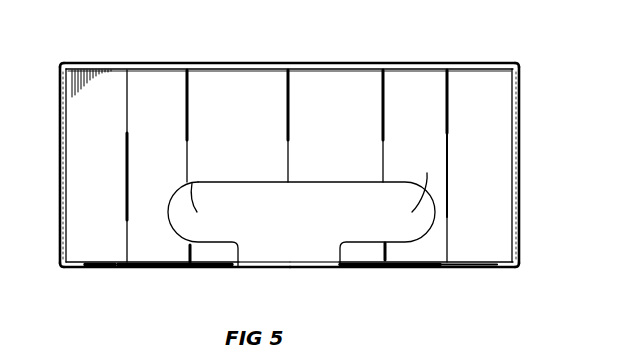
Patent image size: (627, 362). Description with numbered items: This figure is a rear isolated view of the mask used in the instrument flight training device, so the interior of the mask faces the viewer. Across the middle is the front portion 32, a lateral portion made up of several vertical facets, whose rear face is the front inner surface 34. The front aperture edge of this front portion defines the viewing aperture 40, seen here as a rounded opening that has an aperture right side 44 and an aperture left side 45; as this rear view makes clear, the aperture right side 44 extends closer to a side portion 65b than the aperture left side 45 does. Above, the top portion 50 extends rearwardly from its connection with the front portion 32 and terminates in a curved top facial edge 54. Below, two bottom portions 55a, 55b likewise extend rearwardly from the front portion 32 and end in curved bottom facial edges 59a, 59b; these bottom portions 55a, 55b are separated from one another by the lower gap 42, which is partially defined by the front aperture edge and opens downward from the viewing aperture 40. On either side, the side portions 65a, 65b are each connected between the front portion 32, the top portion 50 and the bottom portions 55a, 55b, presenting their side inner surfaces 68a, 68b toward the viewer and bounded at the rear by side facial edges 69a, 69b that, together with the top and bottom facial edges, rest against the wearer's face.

The top portion 50 is at (147, 63).
The curved top facial edge 54 is at (220, 68).
The front portion 32 is at (403, 93).
The front inner surface 34 is at (428, 97).
The viewing aperture 40 is at (303, 215).
The lower gap 42 is at (285, 255).
The aperture right side 44 is at (424, 180).
The aperture left side 45 is at (188, 183).
The bottom portion 55a is at (158, 270).
The bottom portion 55b is at (497, 268).
The curved bottom facial edge 59a is at (92, 270).
The curved bottom facial edge 59b is at (440, 270).
The side portion 65a is at (59, 113).
The side portion 65b is at (520, 158).
The side inner surface 68a is at (68, 147).
The side inner surface 68b is at (512, 128).
The side facial edge 69a is at (60, 185).
The side facial edge 69b is at (520, 212).